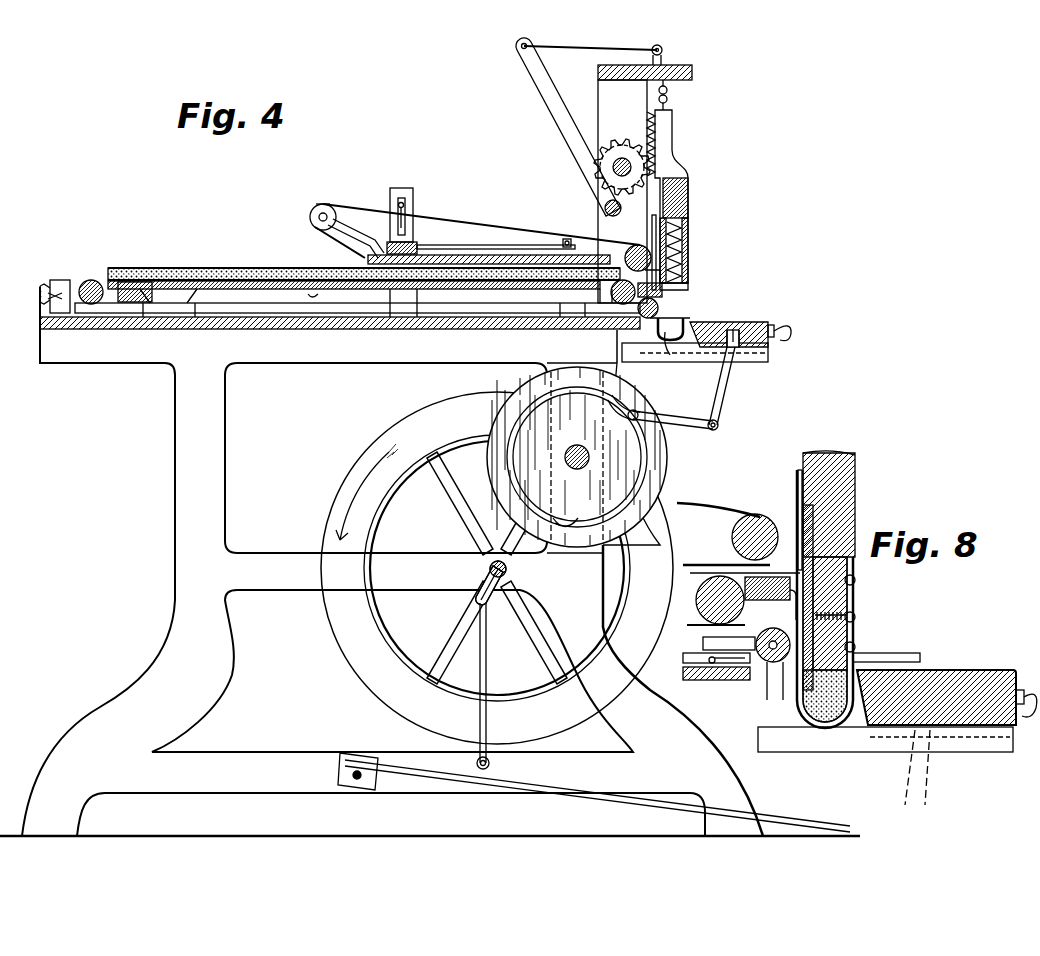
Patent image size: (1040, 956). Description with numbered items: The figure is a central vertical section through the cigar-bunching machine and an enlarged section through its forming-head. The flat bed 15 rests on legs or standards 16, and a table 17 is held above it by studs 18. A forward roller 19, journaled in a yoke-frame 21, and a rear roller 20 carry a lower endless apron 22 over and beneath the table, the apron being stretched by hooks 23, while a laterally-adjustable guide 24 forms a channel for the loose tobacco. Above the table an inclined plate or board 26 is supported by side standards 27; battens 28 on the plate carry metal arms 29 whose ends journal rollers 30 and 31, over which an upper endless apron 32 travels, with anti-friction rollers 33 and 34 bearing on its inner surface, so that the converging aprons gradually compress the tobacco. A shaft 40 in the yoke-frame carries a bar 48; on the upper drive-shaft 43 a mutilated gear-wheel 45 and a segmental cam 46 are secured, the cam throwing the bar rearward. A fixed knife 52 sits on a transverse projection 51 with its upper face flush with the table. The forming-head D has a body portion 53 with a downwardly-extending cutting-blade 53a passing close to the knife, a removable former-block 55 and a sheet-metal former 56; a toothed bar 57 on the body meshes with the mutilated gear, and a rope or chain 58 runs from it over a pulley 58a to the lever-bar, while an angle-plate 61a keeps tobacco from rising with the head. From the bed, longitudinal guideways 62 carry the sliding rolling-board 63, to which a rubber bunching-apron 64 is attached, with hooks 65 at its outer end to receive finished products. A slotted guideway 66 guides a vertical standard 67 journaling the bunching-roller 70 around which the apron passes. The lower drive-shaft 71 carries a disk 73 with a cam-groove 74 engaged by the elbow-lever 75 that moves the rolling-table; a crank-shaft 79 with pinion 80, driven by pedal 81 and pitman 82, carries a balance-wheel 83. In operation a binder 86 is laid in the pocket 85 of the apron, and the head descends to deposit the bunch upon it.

In FIG. 4, the bed 15 is at (340, 330).
In FIG. 8, the bed 15 is at (693, 680).
In FIG. 4, the legs or standards 16 is at (430, 561).
In FIG. 4, the table 17 is at (319, 294).
In FIG. 4, the studs 18 is at (163, 296).
In FIG. 4, the roller 19 is at (613, 292).
In FIG. 8, the roller 19 is at (711, 600).
In FIG. 4, the roller 20 is at (96, 275).
In FIG. 4, the yoke-frame 21 is at (645, 184).
In FIG. 4, the endless apron 22 is at (357, 300).
In FIG. 8, the endless apron 22 is at (694, 626).
In FIG. 4, the hooks 23 is at (66, 282).
In FIG. 4, the laterally-adjustable guide 24 is at (240, 268).
In FIG. 4, the plate or board 26 is at (489, 254).
In FIG. 4, the side standards 27 is at (413, 200).
In FIG. 4, the battens 28 is at (414, 239).
In FIG. 4, the metal arms 29 is at (310, 217).
In FIG. 4, the roller 30 is at (637, 244).
In FIG. 8, the roller 30 is at (745, 537).
In FIG. 4, the roller 31 is at (320, 204).
In FIG. 4, the endless apron 32 is at (518, 232).
In FIG. 8, the endless apron 32 is at (721, 505).
In FIG. 4, the anti-friction roller 33 is at (568, 238).
In FIG. 4, the anti-friction roller 34 is at (356, 238).
In FIG. 4, the shaft 40 is at (621, 207).
In FIG. 4, the upper drive-shaft 43 is at (667, 158).
In FIG. 4, the mutilated gear-wheel 45 is at (634, 131).
In FIG. 4, the segmental cam 46 is at (613, 164).
In FIG. 4, the bar 48 is at (565, 136).
In FIG. 4, the transverse projection or extension 51 is at (662, 296).
In FIG. 8, the transverse projection or extension 51 is at (790, 605).
In FIG. 4, the knife 52 is at (692, 281).
In FIG. 8, the knife 52 is at (782, 575).
In FIG. 8, the body portion 53 is at (858, 500).
In FIG. 4, the cutting-blade 53a is at (690, 222).
In FIG. 8, the cutting-blade 53a is at (850, 632).
In FIG. 4, the former-block 55 is at (689, 240).
In FIG. 4, the former 56 is at (690, 260).
In FIG. 8, the former 56 is at (850, 602).
In FIG. 4, the toothed bar 57 is at (674, 114).
In FIG. 4, the rope or chain 58 is at (624, 48).
In FIG. 4, the pulley 58a is at (679, 49).
In FIG. 4, the angle-plate 61a is at (616, 242).
In FIG. 8, the angle-plate 61a is at (796, 498).
In FIG. 4, the longitudinal guideways 62 is at (675, 349).
In FIG. 8, the longitudinal guideways 62 is at (885, 739).
In FIG. 4, the rolling-board 63 is at (773, 325).
In FIG. 8, the rolling-board 63 is at (1020, 690).
In FIG. 4, the bunching-apron 64 is at (736, 322).
In FIG. 8, the bunching-apron 64 is at (965, 670).
In FIG. 4, the hooks 65 is at (792, 331).
In FIG. 8, the hooks 65 is at (1022, 735).
In FIG. 8, the slotted guideway 66 is at (688, 660).
In FIG. 8, the vertical standard 67 is at (729, 643).
In FIG. 4, the bunching-roller 70 is at (649, 318).
In FIG. 8, the bunching-roller 70 is at (766, 665).
In FIG. 4, the lower drive-shaft 71 is at (588, 447).
In FIG. 4, the disk or solid wheel 73 is at (620, 480).
In FIG. 4, the cam-groove 74 is at (520, 425).
In FIG. 4, the elbow-lever 75 is at (728, 380).
In FIG. 8, the elbow-lever 75 is at (910, 780).
In FIG. 4, the crank-shaft 79 is at (490, 570).
In FIG. 8, the pinion 80 is at (880, 653).
In FIG. 4, the pedal 81 is at (594, 792).
In FIG. 4, the pitman 82 is at (488, 668).
In FIG. 4, the balance-wheel 83 is at (497, 568).
In FIG. 4, the pocket 85 is at (672, 352).
In FIG. 8, the pocket 85 is at (823, 712).
In FIG. 4, the binder 86 is at (684, 320).
In FIG. 4, the cam follower a is at (636, 408).
In FIG. 4, the forming-head D is at (690, 200).
In FIG. 8, the forming-head D is at (803, 460).